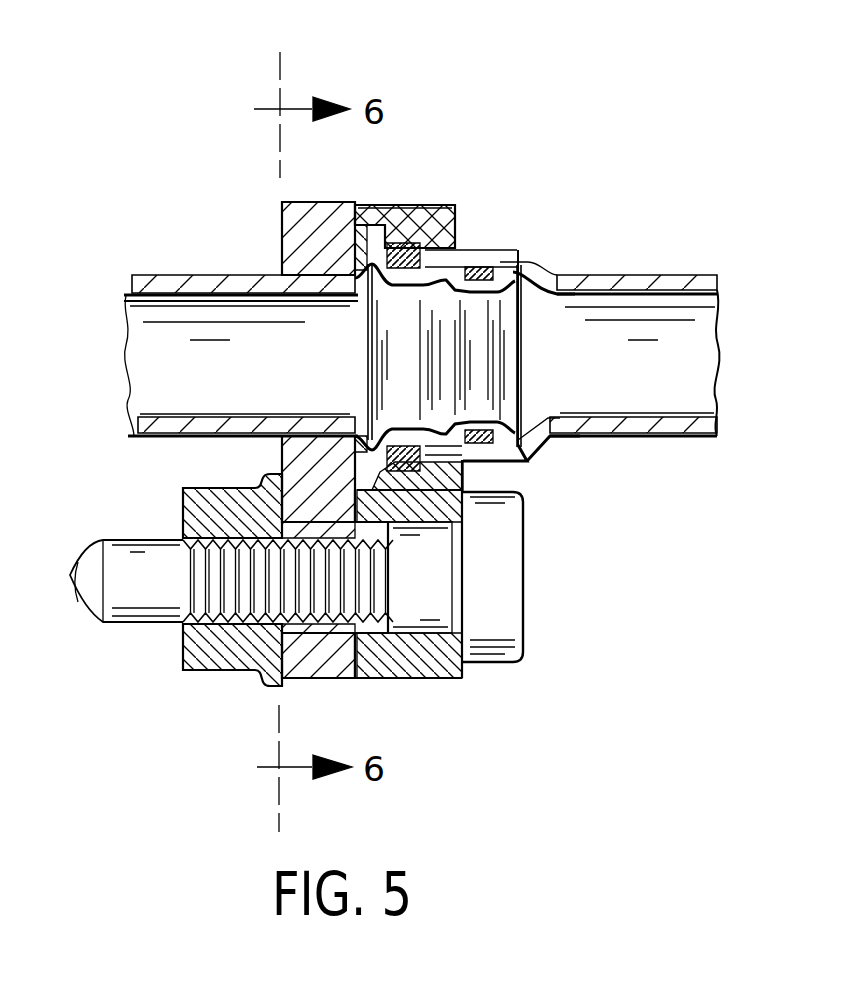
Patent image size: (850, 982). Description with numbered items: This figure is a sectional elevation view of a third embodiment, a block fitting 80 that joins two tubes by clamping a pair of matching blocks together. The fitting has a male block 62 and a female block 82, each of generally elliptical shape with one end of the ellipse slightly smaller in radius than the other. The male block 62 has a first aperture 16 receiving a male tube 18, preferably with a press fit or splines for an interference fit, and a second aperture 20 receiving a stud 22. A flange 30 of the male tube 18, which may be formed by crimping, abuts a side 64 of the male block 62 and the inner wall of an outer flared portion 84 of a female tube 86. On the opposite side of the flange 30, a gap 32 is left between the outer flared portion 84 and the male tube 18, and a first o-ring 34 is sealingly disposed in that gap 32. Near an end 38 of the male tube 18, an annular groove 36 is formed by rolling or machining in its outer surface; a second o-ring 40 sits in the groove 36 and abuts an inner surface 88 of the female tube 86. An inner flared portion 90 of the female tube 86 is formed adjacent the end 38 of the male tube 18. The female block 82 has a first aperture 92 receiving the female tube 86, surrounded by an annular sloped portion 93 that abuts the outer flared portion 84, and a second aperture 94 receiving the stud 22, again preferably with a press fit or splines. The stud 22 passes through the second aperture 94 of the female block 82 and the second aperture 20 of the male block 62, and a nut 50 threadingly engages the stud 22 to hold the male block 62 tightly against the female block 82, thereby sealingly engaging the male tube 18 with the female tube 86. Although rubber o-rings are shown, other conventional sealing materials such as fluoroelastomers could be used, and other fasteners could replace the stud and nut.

The first aperture 16 is at (285, 300).
The male tube 18 is at (138, 275).
The second aperture 20 is at (317, 633).
The stud 22 is at (523, 608).
The flange 30 is at (345, 248).
The gap 32 is at (450, 205).
The first o-ring 34 is at (452, 238).
The annular groove 36 is at (535, 265).
The end 38 is at (527, 372).
The second o-ring 40 is at (518, 272).
The nut 50 is at (217, 647).
The male block 62 is at (282, 238).
The side 64 is at (365, 206).
The block fitting 80 is at (492, 716).
The female block 82 is at (420, 246).
The outer flared portion 84 is at (402, 206).
The female tube 86 is at (700, 262).
The inner surface 88 is at (714, 314).
The inner flared portion 90 is at (685, 277).
The first aperture 92 is at (420, 458).
The annular sloped portion 93 is at (440, 496).
The second aperture 94 is at (428, 622).